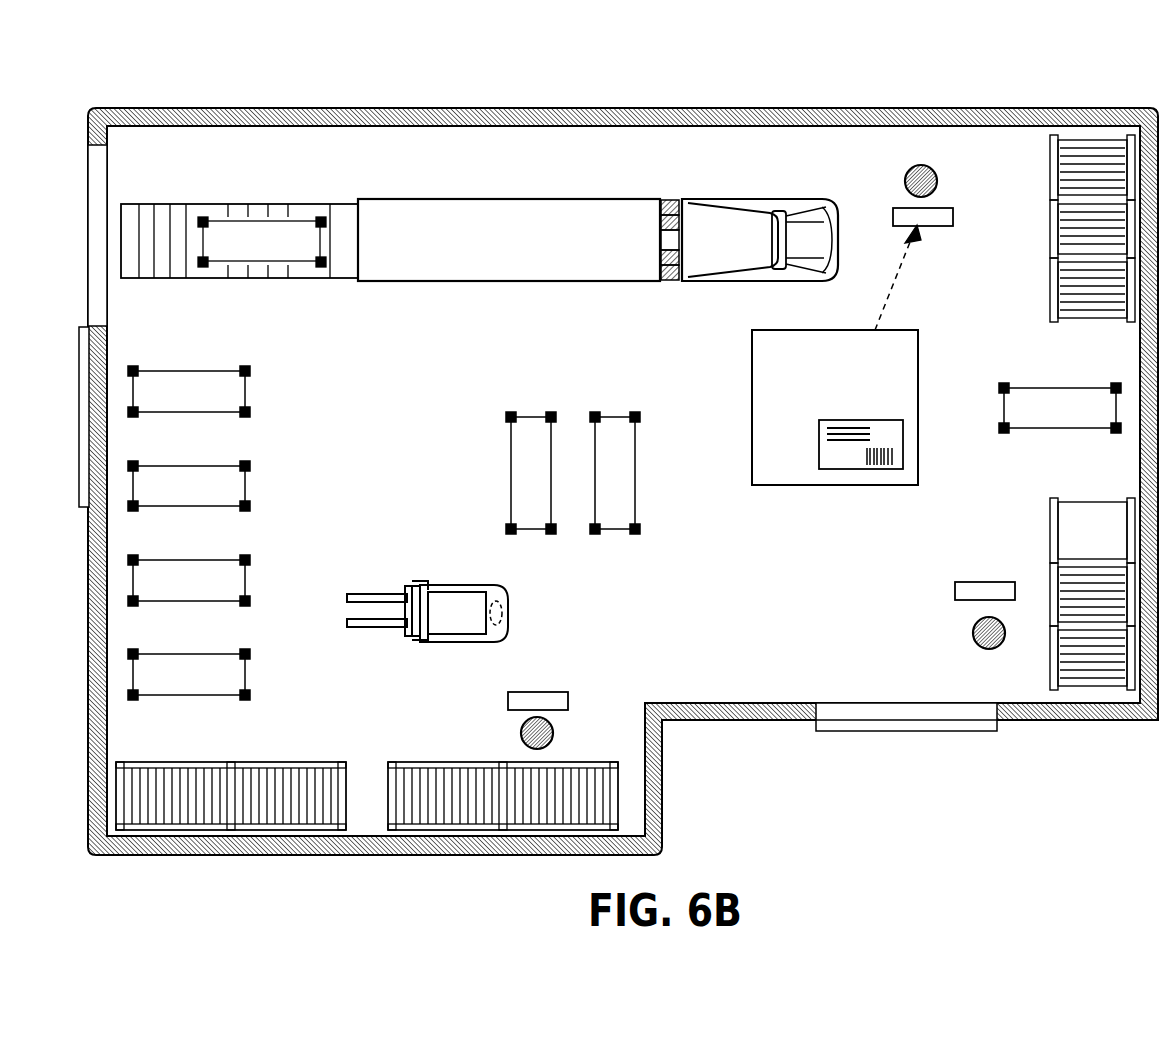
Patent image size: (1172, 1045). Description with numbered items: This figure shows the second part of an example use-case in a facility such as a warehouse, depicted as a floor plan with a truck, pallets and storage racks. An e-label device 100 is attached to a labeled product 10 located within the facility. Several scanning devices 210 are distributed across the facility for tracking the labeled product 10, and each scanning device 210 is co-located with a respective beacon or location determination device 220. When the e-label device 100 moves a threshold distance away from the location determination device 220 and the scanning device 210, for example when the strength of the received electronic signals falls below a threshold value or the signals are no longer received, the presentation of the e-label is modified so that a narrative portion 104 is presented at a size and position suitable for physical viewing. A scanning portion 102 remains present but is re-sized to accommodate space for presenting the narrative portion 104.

The labeled product 10 is at (836, 355).
The e-label device 100 is at (870, 483).
The scanning portion 102 is at (893, 455).
The narrative portion 104 is at (829, 440).
The scanning device 210 is at (943, 227).
The location determination device 220 is at (486, 900).